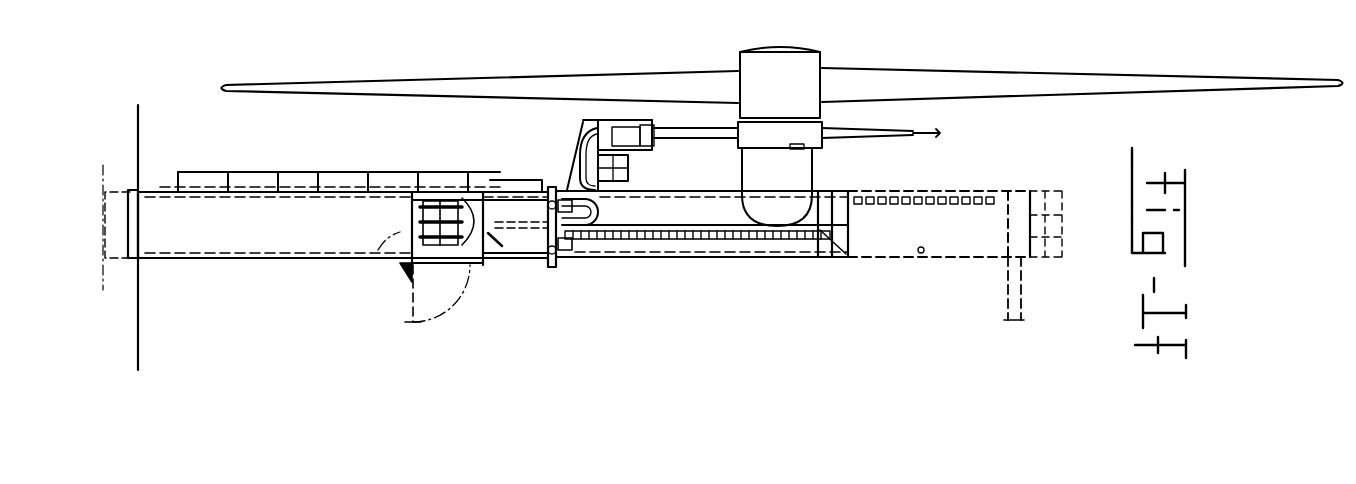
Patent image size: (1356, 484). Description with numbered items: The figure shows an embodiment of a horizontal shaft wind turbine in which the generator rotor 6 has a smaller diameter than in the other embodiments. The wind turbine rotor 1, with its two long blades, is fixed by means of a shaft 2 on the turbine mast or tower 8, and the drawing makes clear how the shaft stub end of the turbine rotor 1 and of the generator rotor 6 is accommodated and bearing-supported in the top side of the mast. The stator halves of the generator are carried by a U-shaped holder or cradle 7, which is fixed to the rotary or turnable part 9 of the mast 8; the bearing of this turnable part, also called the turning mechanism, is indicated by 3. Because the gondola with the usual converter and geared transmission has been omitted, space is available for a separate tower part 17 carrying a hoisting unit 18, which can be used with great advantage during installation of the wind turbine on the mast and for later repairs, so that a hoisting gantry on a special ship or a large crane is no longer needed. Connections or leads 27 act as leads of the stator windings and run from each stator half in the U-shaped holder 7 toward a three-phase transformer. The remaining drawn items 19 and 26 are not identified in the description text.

The wind turbine rotor 1 is at (1017, 78).
The shaft 2 is at (746, 62).
The bearing / turning mechanism 3 is at (545, 264).
The generator rotor 6 is at (926, 134).
The U-shaped holder 7 is at (578, 136).
The turbine mast 8 is at (255, 260).
The turnable part of the mast 9 is at (655, 262).
The separate tower part 17 is at (878, 261).
The hoisting unit 18 is at (1011, 324).
The fastener 19 is at (908, 256).
The carriage 26 is at (404, 230).
The leads 27 is at (592, 207).